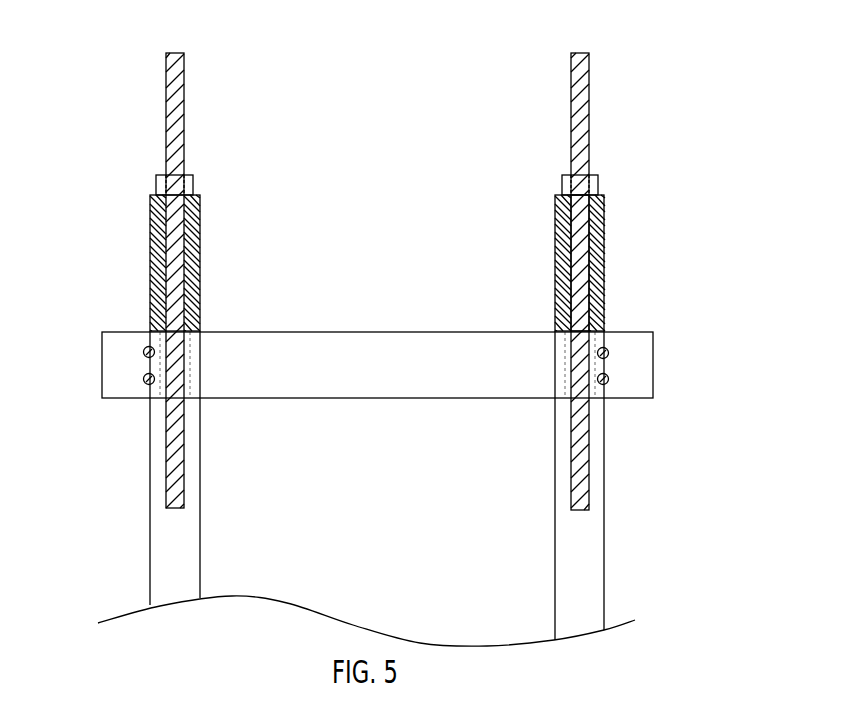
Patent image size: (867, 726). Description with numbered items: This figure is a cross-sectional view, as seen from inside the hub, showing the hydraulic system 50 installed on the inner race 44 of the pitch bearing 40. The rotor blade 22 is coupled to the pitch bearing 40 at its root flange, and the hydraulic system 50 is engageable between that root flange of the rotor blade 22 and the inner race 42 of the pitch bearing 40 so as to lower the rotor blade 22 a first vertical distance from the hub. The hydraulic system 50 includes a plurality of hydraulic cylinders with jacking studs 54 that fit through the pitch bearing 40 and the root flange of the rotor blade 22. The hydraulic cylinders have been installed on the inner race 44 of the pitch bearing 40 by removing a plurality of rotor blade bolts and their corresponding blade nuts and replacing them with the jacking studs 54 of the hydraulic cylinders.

The rotor blade 22 is at (604, 597).
The pitch bearing 40 is at (410, 375).
The inner race 42 is at (636, 398).
The inner race 44 is at (593, 400).
The hydraulic system 50 is at (588, 253).
The jacking stud 54 is at (571, 263).